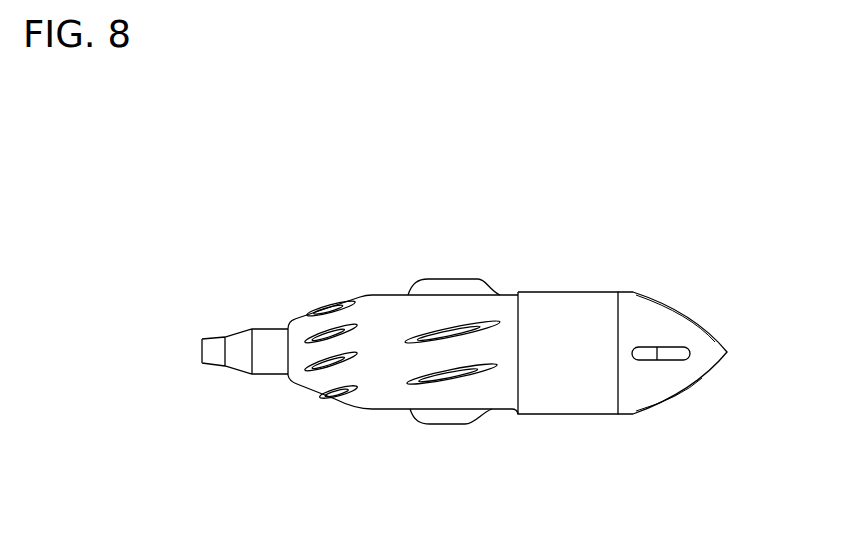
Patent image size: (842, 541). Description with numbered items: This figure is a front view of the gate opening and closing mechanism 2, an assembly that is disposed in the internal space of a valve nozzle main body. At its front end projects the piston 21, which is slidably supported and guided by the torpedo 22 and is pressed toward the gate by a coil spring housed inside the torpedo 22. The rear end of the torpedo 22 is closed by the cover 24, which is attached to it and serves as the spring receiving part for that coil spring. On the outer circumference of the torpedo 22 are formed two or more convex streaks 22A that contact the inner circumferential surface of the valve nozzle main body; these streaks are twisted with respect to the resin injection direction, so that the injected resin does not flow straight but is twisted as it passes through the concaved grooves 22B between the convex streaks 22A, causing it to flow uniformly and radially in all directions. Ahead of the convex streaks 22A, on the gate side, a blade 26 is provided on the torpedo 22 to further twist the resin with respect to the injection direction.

The gate opening and closing mechanism 2 is at (651, 229).
The piston 21 is at (245, 355).
The torpedo 22 is at (582, 397).
The convex streaks 22A is at (465, 330).
The concaved grooves 22B is at (438, 393).
The cover 24 is at (670, 380).
The blade 26 is at (340, 303).